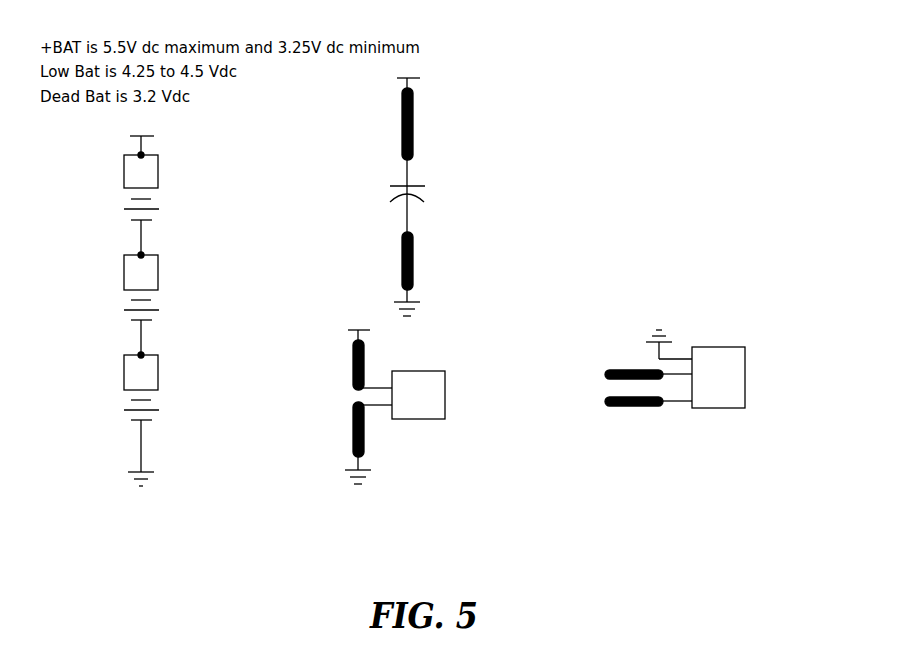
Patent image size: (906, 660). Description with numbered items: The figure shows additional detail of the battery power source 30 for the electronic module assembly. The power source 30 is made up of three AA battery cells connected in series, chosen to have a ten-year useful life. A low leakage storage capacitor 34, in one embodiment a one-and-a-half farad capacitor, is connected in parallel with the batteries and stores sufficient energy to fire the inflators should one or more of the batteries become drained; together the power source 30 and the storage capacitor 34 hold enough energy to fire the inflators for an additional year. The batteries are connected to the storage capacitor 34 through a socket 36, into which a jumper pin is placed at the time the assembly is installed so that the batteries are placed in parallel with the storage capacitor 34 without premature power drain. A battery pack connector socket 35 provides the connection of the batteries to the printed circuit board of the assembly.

The power source 30 is at (82, 524).
The storage capacitor 34 is at (447, 137).
The battery pack connector socket 35 is at (445, 385).
The socket 36 is at (745, 368).